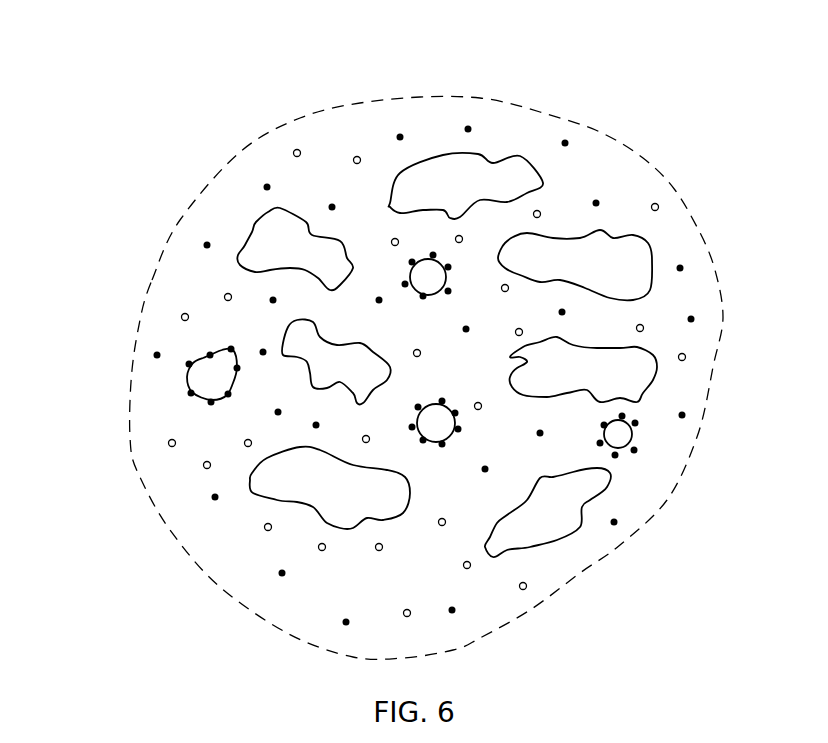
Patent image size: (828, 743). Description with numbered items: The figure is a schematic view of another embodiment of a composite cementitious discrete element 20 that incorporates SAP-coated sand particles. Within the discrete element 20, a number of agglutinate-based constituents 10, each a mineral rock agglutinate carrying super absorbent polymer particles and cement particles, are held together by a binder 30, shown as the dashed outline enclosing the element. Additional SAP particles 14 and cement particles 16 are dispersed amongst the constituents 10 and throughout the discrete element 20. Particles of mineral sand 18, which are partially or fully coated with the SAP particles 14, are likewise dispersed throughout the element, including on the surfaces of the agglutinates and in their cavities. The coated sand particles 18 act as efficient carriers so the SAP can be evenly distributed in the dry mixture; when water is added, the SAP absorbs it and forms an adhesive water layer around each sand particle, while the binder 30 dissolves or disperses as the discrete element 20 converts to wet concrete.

The agglutinate-based constituent 10 is at (503, 177).
The super absorbent polymer (SAP) particles 14 is at (267, 187).
The cement particles 16 is at (297, 153).
The mineral sand particles 18 is at (190, 377).
The composite cementitious discrete element 20 is at (127, 173).
The binder 30 is at (643, 158).